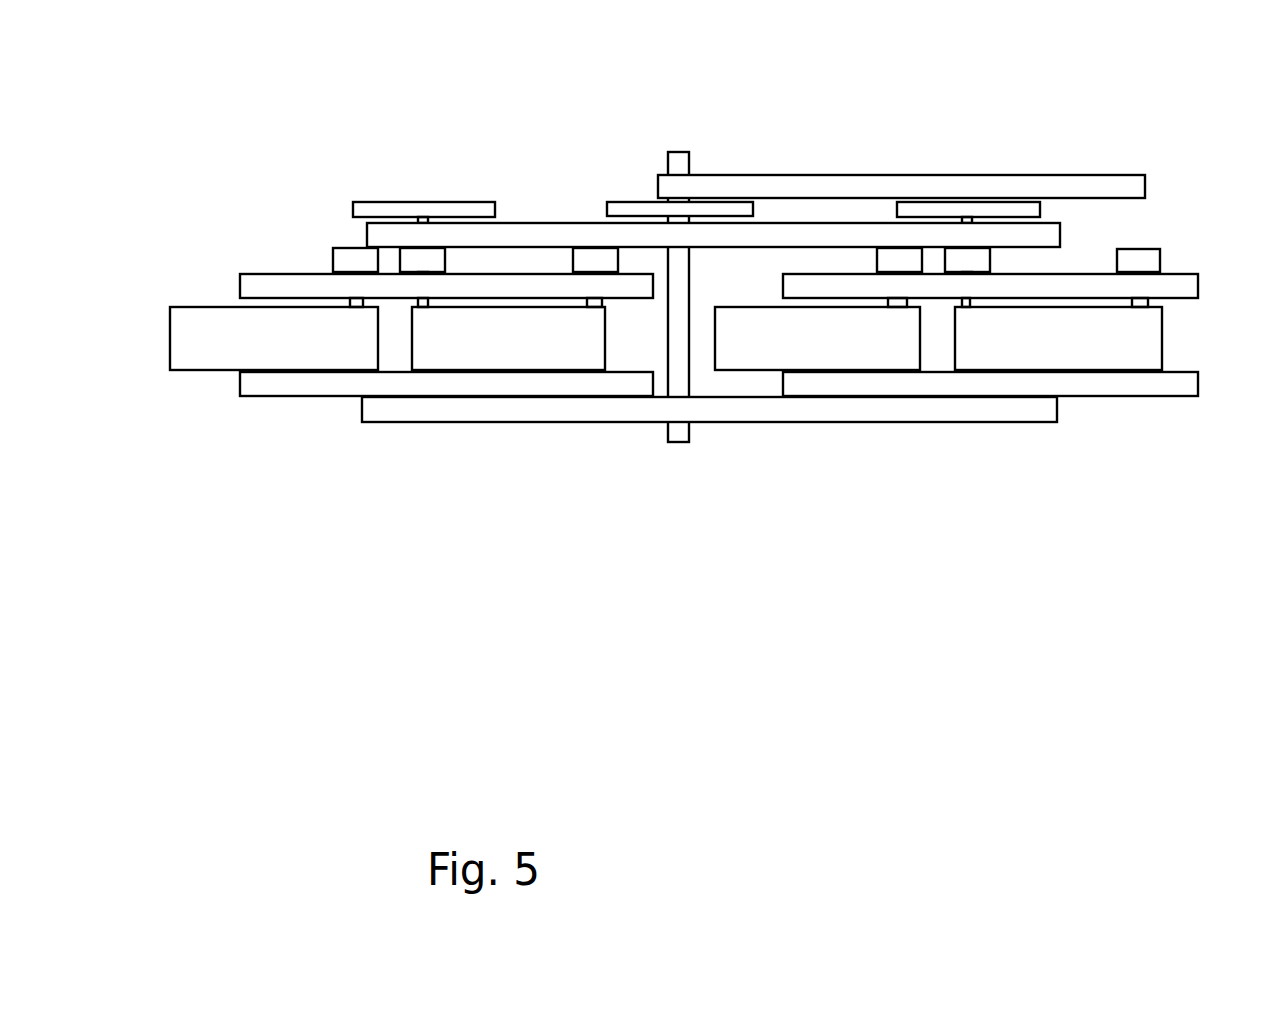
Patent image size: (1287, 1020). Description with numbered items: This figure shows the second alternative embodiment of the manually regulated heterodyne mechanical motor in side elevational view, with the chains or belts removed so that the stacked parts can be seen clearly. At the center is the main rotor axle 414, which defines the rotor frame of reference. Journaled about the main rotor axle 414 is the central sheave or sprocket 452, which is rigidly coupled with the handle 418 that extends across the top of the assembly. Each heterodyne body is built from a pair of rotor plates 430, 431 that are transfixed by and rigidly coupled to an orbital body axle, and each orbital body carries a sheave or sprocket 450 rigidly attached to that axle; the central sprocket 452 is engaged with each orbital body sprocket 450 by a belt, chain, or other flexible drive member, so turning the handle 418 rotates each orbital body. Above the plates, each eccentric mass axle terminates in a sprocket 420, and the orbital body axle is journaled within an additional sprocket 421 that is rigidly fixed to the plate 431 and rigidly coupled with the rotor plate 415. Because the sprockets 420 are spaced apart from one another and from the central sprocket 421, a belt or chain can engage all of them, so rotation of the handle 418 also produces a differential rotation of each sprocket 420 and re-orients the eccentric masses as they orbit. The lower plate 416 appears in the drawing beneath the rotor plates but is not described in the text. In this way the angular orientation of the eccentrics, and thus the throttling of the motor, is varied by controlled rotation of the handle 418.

The main rotor axle 414 is at (690, 378).
The rotor plate 415 is at (813, 235).
The lower base plate 416 is at (597, 412).
The handle 418 is at (898, 192).
The sprocket 420 is at (357, 257).
The central sprocket 421 is at (430, 262).
The rotor plate 430 is at (347, 380).
The rotor plate 431 is at (248, 288).
The orbital body sprocket 450 is at (450, 207).
The central sprocket 452 is at (647, 208).